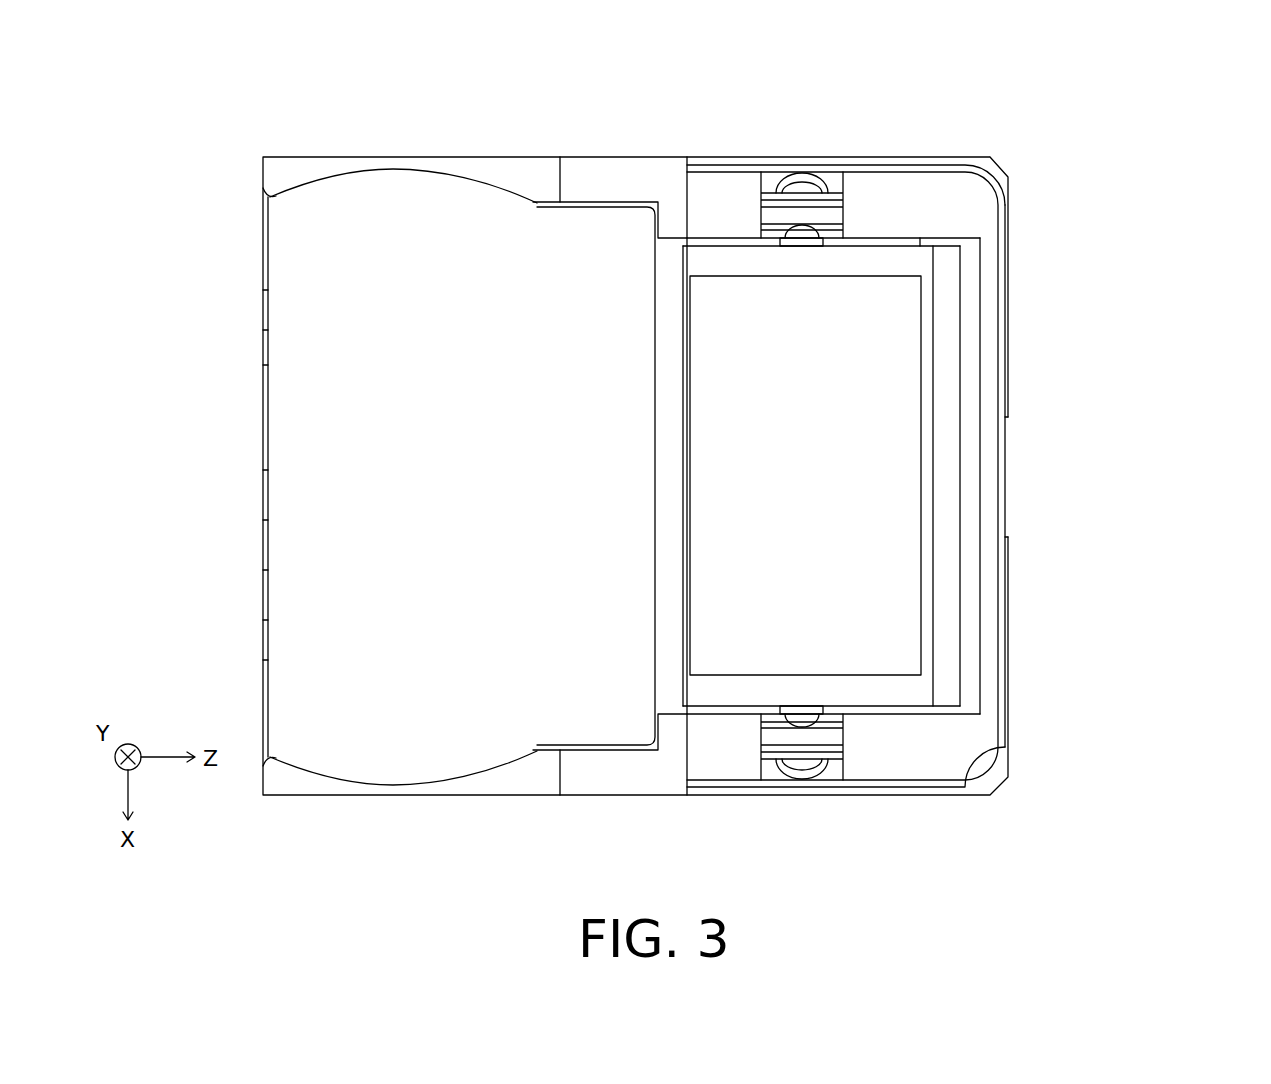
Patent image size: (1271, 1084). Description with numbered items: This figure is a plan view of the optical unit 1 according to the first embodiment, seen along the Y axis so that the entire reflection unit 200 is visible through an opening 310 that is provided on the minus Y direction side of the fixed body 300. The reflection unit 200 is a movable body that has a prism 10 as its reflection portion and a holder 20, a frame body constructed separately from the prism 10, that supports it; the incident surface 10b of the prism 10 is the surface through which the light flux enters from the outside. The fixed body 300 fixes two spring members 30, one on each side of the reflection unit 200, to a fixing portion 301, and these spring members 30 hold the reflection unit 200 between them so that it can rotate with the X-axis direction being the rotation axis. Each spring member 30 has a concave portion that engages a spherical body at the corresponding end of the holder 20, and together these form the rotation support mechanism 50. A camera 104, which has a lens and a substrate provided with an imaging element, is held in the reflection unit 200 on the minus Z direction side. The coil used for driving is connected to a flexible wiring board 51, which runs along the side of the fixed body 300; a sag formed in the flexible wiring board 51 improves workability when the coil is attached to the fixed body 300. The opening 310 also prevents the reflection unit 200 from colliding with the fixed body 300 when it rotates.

The optical unit 1 is at (1091, 155).
The fixed body 300 is at (540, 157).
The camera 104 is at (618, 200).
The rotation support mechanism 50 is at (778, 155).
The flexible wiring board 51 is at (1005, 500).
The reflection unit 200 is at (960, 320).
The opening 310 is at (980, 375).
The prism 10 is at (880, 395).
The incident surface 10b is at (880, 303).
The holder 20 is at (948, 555).
The spring member 30 is at (866, 812).
The fixing portion 301 is at (794, 218).